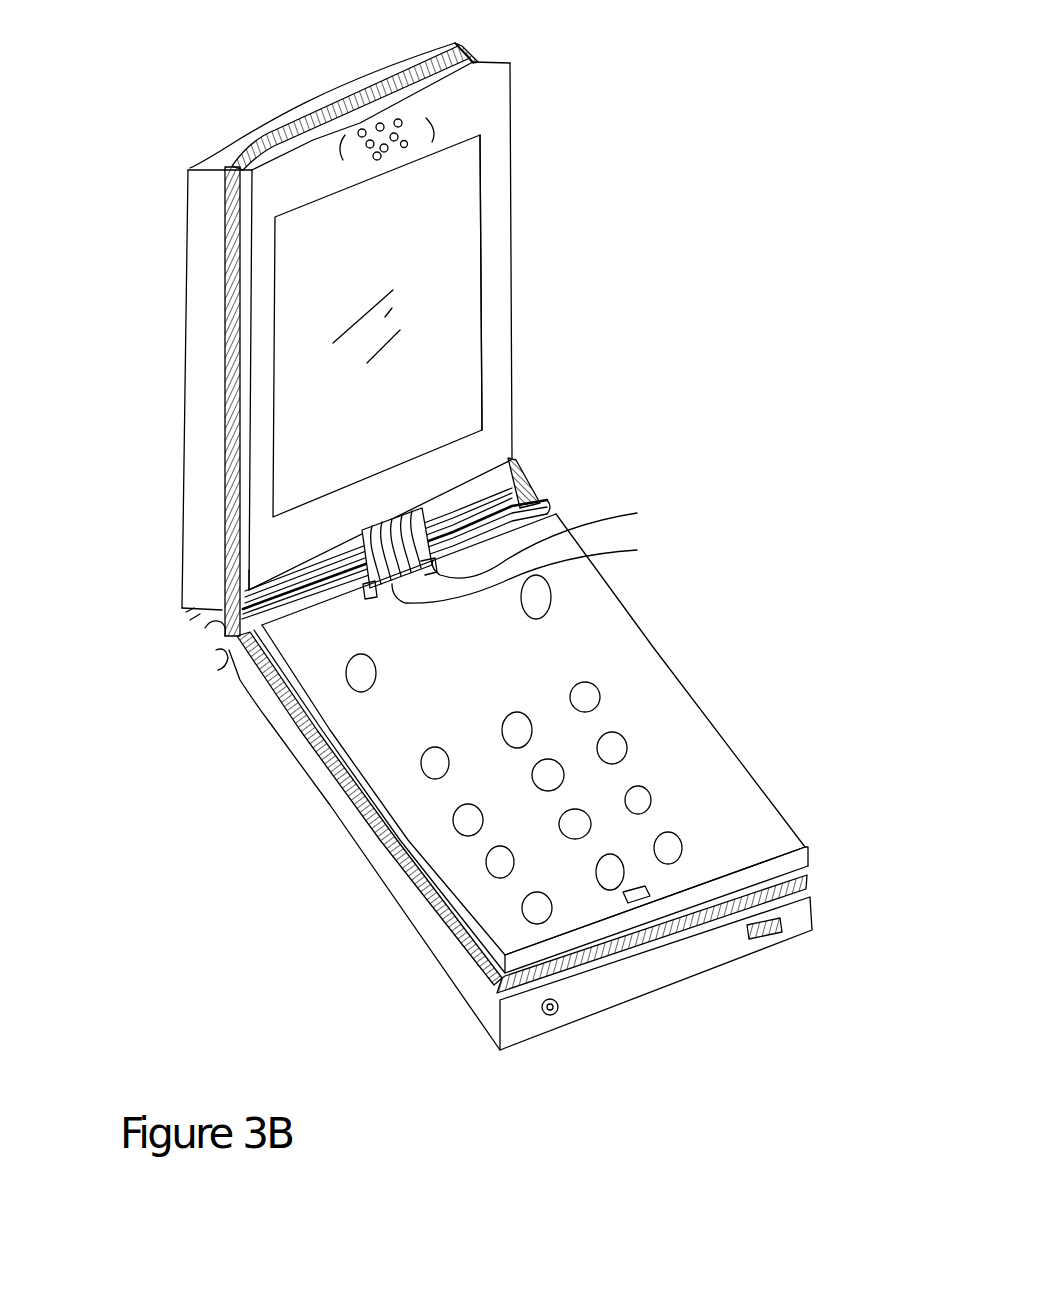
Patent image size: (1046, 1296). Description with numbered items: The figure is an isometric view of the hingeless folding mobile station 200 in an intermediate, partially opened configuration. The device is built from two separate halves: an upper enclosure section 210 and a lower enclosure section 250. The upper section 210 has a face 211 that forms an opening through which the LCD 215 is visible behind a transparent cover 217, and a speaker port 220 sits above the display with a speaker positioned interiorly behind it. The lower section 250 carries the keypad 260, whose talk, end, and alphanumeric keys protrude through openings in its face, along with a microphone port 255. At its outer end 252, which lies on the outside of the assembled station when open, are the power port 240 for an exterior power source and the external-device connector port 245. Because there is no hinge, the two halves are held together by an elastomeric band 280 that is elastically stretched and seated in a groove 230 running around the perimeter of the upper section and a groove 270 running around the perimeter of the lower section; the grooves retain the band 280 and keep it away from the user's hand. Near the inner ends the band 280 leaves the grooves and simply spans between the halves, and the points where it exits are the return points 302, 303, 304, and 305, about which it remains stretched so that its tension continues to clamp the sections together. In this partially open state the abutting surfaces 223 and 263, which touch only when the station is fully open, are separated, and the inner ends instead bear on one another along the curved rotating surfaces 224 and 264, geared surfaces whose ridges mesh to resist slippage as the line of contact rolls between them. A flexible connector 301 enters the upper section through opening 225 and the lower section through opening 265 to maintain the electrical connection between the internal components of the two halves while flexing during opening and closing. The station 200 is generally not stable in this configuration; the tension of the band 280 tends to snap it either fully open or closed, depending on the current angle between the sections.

The mobile station 200 is at (832, 418).
The upper enclosure section 210 is at (513, 313).
The face 211 is at (487, 108).
The LCD 215 is at (442, 217).
The transparent cover 217 is at (457, 263).
The speaker port 220 is at (413, 122).
The abutting surface 223 is at (193, 617).
The rotating surface 224 is at (222, 606).
The opening 225 is at (425, 508).
The groove 230 is at (509, 60).
The power port 240 is at (558, 1012).
The external-device connector port 245 is at (783, 923).
The lower enclosure section 250 is at (658, 645).
The outer end 252 is at (520, 1027).
The microphone port 255 is at (650, 885).
The keypad 260 is at (630, 768).
The abutting surface 263 is at (216, 649).
The rotating surface 264 is at (230, 647).
The opening 265 is at (559, 539).
The groove 270 is at (808, 890).
The elastomeric band 280 is at (478, 58).
The flexible connector 301 is at (536, 575).
The return point 302 is at (247, 585).
The return point 303 is at (513, 456).
The return point 304 is at (228, 648).
The return point 305 is at (549, 508).